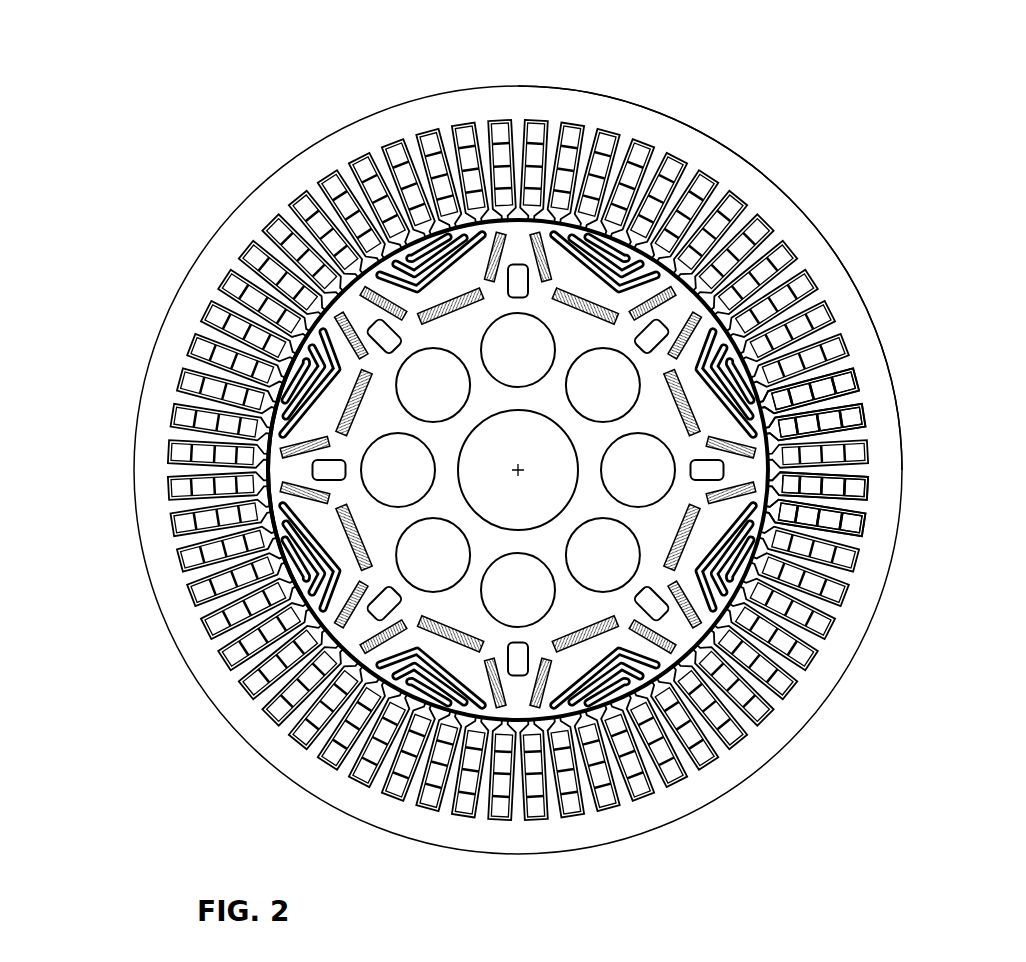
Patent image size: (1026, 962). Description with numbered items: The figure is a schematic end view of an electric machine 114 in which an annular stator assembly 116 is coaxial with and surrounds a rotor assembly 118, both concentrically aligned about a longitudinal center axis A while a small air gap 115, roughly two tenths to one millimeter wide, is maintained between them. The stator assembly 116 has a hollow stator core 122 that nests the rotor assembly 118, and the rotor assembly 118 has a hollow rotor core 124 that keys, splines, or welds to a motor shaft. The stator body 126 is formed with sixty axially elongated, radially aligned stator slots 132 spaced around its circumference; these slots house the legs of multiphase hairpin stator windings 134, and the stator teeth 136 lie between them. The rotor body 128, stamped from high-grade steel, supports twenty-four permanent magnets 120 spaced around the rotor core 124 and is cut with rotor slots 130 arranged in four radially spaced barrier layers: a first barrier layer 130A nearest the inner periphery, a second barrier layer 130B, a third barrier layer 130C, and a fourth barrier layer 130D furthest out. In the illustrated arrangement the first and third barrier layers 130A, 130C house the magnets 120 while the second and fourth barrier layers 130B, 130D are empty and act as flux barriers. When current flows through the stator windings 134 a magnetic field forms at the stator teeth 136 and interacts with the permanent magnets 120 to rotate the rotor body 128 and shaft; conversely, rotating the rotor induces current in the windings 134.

The electric machine 114 is at (887, 145).
The air gap 115 is at (524, 214).
The stator assembly 116 is at (889, 347).
The rotor assembly 118 is at (268, 452).
The permanent magnets 120 is at (498, 655).
The stator core 122 is at (772, 498).
The rotor core 124 is at (482, 430).
The stator body 126 is at (848, 273).
The rotor body 128 is at (518, 226).
The rotor slots 130 is at (362, 554).
The first barrier layer 130A is at (392, 272).
The second barrier layer 130B is at (405, 262).
The third barrier layer 130C is at (415, 252).
The fourth barrier layer 130D is at (426, 244).
The stator slots 132 is at (875, 497).
The stator windings 134 is at (858, 545).
The stator teeth 136 is at (622, 698).
The longitudinal center axis A is at (524, 474).